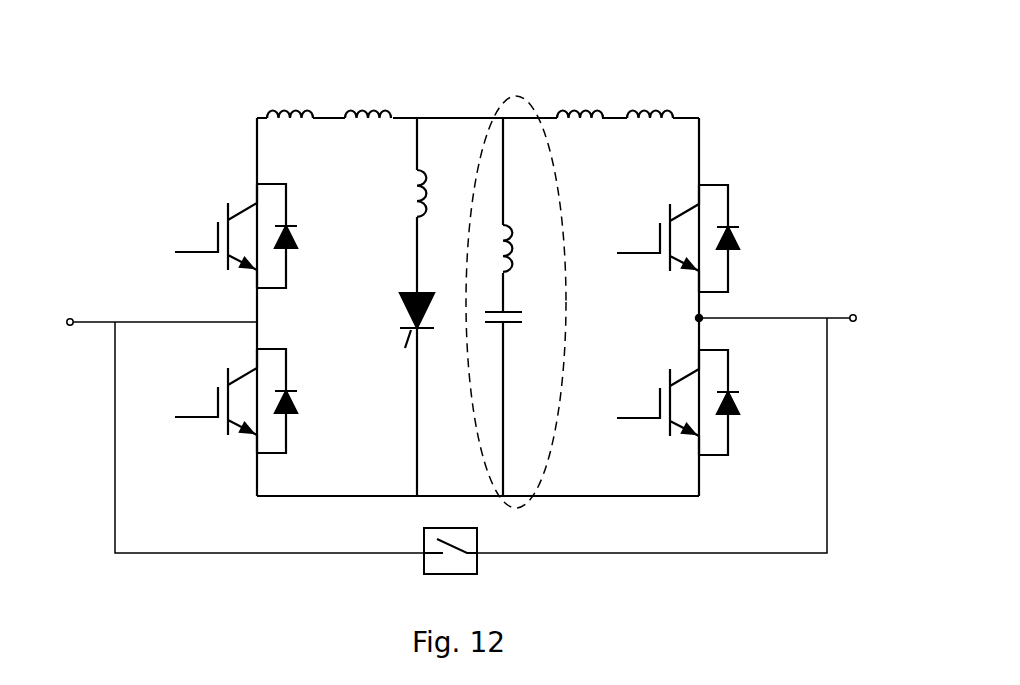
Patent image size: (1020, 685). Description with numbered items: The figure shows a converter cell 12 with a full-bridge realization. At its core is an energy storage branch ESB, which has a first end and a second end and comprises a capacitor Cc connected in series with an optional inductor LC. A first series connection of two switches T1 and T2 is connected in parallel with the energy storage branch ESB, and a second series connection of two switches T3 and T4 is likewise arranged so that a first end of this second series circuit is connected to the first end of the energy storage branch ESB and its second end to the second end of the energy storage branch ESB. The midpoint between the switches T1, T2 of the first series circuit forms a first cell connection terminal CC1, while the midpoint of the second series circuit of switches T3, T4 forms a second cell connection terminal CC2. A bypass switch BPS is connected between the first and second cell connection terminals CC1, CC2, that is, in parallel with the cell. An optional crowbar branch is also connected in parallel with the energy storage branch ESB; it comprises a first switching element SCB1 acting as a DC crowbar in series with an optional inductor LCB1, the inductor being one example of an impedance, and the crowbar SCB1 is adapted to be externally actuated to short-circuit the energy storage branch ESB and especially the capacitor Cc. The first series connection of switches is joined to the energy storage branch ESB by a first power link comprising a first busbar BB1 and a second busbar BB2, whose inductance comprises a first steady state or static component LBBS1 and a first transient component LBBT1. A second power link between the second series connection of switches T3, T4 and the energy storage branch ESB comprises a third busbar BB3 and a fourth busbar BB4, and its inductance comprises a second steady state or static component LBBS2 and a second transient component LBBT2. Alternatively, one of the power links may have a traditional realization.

The cell 12 is at (831, 130).
The first busbar BB1 is at (328, 118).
The second busbar BB2 is at (380, 512).
The third busbar BB3 is at (613, 118).
The fourth busbar BB4 is at (601, 512).
The first transient component LBBT1 is at (271, 97).
The first steady state component LBBS1 is at (377, 97).
The second transient component LBBT2 is at (569, 97).
The second steady state component LBBS2 is at (669, 97).
The inductor LCB1 is at (379, 205).
The first switching element SCB1 is at (380, 394).
The inductor LC is at (531, 215).
The capacitor Cc is at (518, 399).
The energy storage branch ESB is at (537, 302).
The switch T1 is at (232, 236).
The switch T2 is at (226, 401).
The switch T3 is at (675, 238).
The switch T4 is at (675, 402).
The first cell connection terminal CC1 is at (133, 323).
The second cell connection terminal CC2 is at (807, 318).
The bypass switch BPS is at (471, 465).